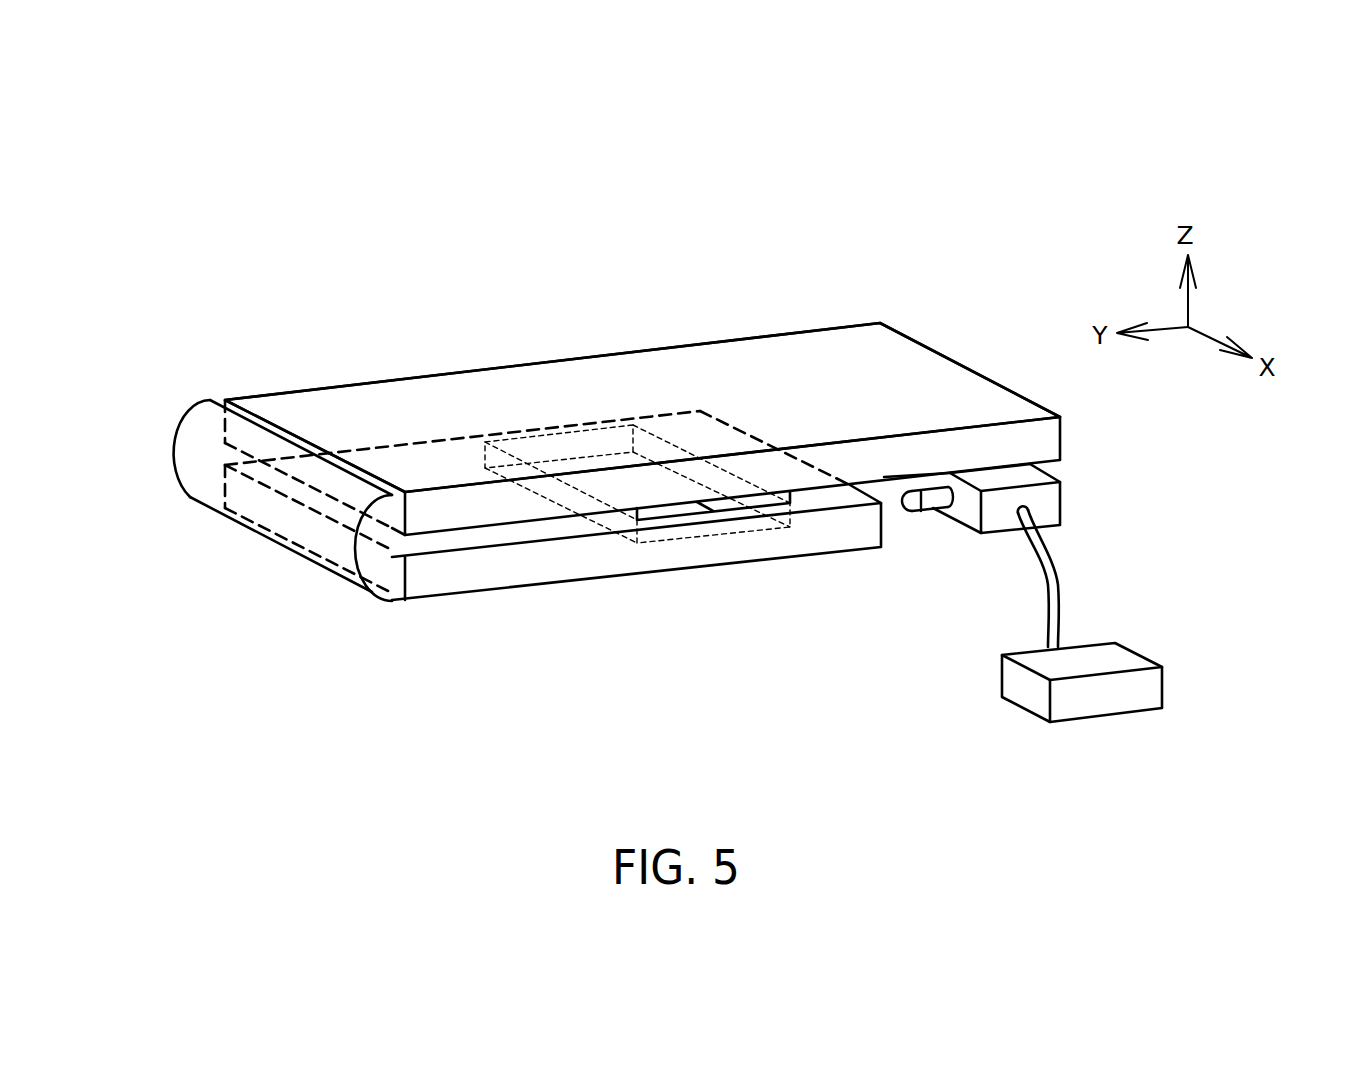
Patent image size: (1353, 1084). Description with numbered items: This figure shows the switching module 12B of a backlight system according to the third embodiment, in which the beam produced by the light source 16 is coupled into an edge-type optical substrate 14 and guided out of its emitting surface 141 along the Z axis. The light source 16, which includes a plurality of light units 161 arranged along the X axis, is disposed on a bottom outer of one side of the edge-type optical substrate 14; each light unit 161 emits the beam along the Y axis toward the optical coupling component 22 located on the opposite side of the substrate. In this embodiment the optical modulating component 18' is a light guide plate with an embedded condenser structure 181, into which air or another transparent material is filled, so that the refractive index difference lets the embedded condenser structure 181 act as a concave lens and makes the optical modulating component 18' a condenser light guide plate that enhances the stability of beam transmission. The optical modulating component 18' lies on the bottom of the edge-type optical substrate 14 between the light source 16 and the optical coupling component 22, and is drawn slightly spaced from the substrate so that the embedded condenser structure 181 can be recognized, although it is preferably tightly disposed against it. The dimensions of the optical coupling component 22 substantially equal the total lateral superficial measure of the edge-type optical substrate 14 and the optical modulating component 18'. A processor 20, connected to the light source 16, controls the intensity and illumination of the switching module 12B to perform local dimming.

The switching module 12B is at (898, 240).
The edge-type optical substrate 14 is at (660, 367).
The emitting surface 141 is at (525, 377).
The light source 16 is at (1042, 502).
The light unit 161 is at (928, 508).
The optical modulating component 18' is at (553, 529).
The embedded condenser structure 181 is at (715, 528).
The processor 20 is at (1118, 660).
The optical coupling component 22 is at (208, 482).